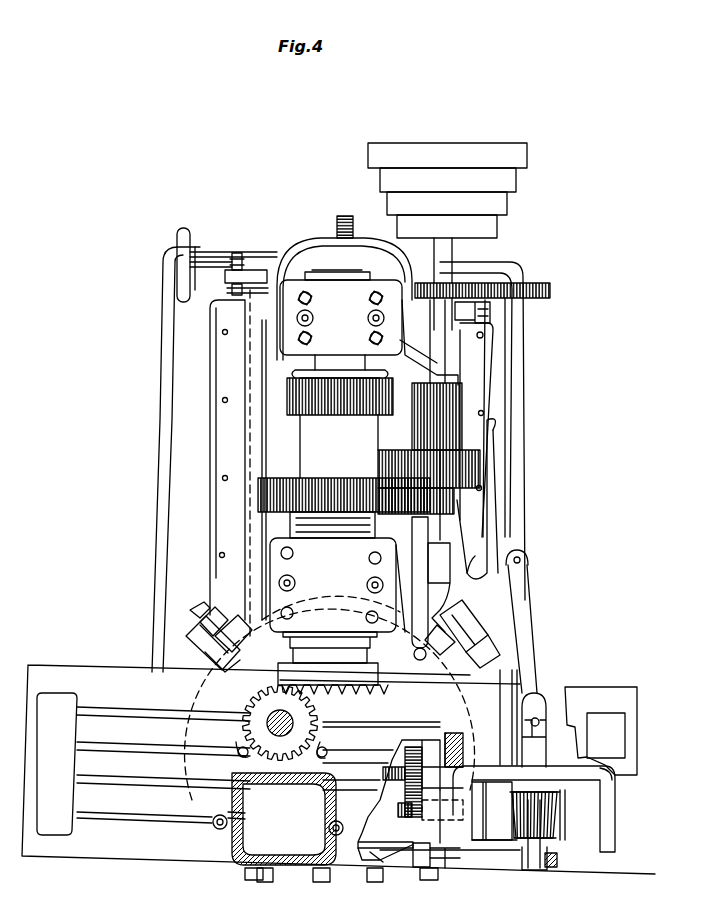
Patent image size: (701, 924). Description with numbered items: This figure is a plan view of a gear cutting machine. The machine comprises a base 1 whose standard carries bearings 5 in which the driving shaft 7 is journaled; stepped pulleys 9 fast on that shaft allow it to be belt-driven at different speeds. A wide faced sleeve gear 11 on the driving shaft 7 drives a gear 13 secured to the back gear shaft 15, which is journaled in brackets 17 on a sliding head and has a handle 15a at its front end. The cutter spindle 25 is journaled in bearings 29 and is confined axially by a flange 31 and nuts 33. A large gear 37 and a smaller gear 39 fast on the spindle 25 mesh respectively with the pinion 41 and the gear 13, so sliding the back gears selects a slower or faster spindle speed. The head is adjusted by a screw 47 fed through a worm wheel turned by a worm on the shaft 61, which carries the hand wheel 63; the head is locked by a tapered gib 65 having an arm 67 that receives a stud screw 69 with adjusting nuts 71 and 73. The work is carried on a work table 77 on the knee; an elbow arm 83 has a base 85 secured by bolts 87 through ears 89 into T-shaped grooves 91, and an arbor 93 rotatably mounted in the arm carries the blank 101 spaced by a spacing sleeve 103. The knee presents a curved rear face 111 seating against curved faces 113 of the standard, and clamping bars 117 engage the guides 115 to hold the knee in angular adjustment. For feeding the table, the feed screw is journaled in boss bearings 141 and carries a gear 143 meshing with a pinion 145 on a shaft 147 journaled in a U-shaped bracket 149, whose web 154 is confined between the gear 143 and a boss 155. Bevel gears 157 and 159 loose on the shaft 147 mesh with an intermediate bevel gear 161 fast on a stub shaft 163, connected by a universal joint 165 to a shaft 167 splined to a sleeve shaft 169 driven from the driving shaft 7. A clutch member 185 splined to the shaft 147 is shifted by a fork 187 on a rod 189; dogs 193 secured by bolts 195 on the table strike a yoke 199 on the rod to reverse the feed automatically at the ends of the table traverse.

The base 1 is at (154, 518).
The bearings 5 is at (440, 340).
The driving shaft 7 is at (430, 263).
The stepped pulleys 9 is at (493, 228).
The sleeve gear 11 is at (492, 436).
The gear 13 is at (480, 470).
The back gear shaft 15 is at (428, 402).
The handle 15a is at (420, 596).
The brackets 17 is at (437, 370).
The spindle 25 is at (343, 272).
The bearings 29 is at (364, 456).
The flange 31 is at (300, 653).
The nuts 33 is at (290, 519).
The large gear 37 is at (262, 494).
The smaller gear 39 is at (287, 392).
The pinion 41 is at (453, 502).
The screw 47 is at (338, 228).
The shaft 61 is at (240, 255).
The hand wheel 63 is at (179, 238).
The tapered gib 65 is at (253, 428).
The arm 67 is at (255, 270).
The stud screw 69 is at (236, 255).
The adjusting nut 71 is at (232, 268).
The adjusting nut 73 is at (227, 289).
The work table 77 is at (137, 852).
The elbow arm 83 is at (225, 845).
The base 85 is at (381, 756).
The bolts 87 is at (245, 752).
The ears 89 is at (250, 766).
The T-shaped grooves 91 is at (141, 713).
The arbor 93 is at (313, 718).
The blank 101 is at (266, 712).
The spacing sleeve 103 is at (256, 683).
The curved rear face 111 is at (196, 628).
The curved faces 113 is at (200, 640).
The flanges or guides 115 is at (205, 650).
The clamping bars 117 is at (210, 655).
The boss bearings 141 is at (428, 779).
The gear 143 is at (437, 735).
The pinion 145 is at (408, 818).
The shaft 147 is at (480, 850).
The U-shaped bracket 149 is at (600, 812).
The web 154 is at (402, 795).
The boss 155 is at (440, 862).
The bevel gear 157 is at (528, 860).
The bevel gear 159 is at (550, 838).
The intermediate bevel gear 161 is at (615, 783).
The stub shaft 163 is at (540, 750).
The universal joint 165 is at (540, 720).
The shaft 167 is at (528, 602).
The sleeve shaft 169 is at (528, 557).
The clutch member 185 is at (557, 826).
The fork 187 is at (550, 867).
The rod 189 is at (480, 868).
The dogs 193 is at (250, 880).
The bolts 195 is at (265, 882).
The yoke 199 is at (322, 882).